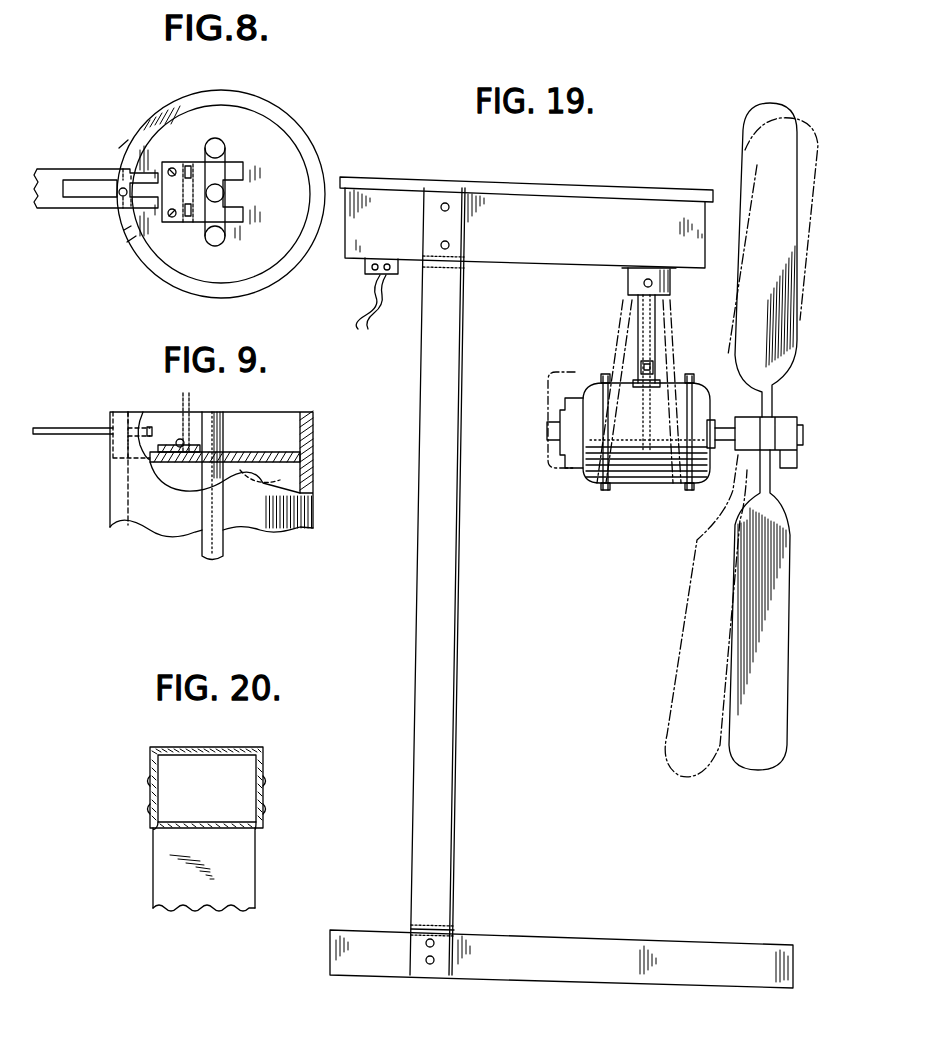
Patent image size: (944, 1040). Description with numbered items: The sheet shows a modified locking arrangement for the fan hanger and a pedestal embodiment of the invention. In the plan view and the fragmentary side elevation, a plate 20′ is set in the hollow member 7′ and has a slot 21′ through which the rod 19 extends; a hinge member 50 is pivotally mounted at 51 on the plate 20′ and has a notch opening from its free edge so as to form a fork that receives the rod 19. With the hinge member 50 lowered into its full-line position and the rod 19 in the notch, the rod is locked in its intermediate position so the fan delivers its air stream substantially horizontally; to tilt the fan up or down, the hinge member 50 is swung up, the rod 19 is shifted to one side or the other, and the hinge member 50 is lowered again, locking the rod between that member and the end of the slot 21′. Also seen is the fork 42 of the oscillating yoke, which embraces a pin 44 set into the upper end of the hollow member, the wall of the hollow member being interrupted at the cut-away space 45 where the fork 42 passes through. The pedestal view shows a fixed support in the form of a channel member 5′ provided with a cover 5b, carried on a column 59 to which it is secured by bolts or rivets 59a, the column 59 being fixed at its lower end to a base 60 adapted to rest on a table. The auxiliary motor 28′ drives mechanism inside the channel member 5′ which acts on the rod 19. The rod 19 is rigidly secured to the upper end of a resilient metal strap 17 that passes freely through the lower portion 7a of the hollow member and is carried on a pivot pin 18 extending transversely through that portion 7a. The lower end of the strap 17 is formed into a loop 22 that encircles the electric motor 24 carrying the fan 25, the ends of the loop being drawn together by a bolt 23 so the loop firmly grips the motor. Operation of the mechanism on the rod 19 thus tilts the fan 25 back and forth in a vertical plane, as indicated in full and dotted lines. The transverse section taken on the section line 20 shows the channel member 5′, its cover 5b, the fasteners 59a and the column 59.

In FIG. 20, the channel member 5′ is at (198, 822).
In FIG. 19, the channel member 5′ is at (572, 248).
In FIG. 20, the cover 5b is at (217, 742).
In FIG. 19, the cover 5b is at (575, 190).
In FIG. 8, the hollow member 7′ is at (158, 116).
In FIG. 9, the hollow member 7′ is at (303, 493).
In FIG. 19, the portion of the hollow member 7a is at (628, 292).
In FIG. 19, the metal strap 17 is at (658, 346).
In FIG. 19, the pivot pin 18 is at (654, 284).
In FIG. 8, the rod 19 is at (224, 193).
In FIG. 9, the rod 19 is at (224, 420).
In FIG. 19, the section line 20 is at (490, 293).
In FIG. 8, the plate 20′ is at (280, 153).
In FIG. 9, the plate 20′ is at (276, 468).
In FIG. 8, the slot 21′ is at (228, 160).
In FIG. 9, the slot 21′ is at (198, 480).
In FIG. 19, the loop 22 is at (652, 488).
In FIG. 19, the bolt 23 is at (656, 368).
In FIG. 19, the electric motor 24 is at (618, 385).
In FIG. 19, the fan 25 is at (748, 158).
In FIG. 19, the auxiliary motor 28′ is at (362, 276).
In FIG. 8, the fork 42 is at (82, 180).
In FIG. 9, the fork 42 is at (56, 420).
In FIG. 8, the pin 44 is at (120, 196).
In FIG. 8, the slot in ring 45 is at (128, 236).
In FIG. 8, the hinge member 50 is at (240, 178).
In FIG. 9, the hinge member 50 is at (181, 420).
In FIG. 8, the pivot 51 is at (190, 164).
In FIG. 9, the pivot 51 is at (178, 440).
In FIG. 20, the column 59 is at (236, 896).
In FIG. 19, the column 59 is at (452, 660).
In FIG. 20, the bolts or rivets 59a is at (266, 808).
In FIG. 19, the bolts or rivets 59a is at (440, 243).
In FIG. 19, the base 60 is at (603, 946).